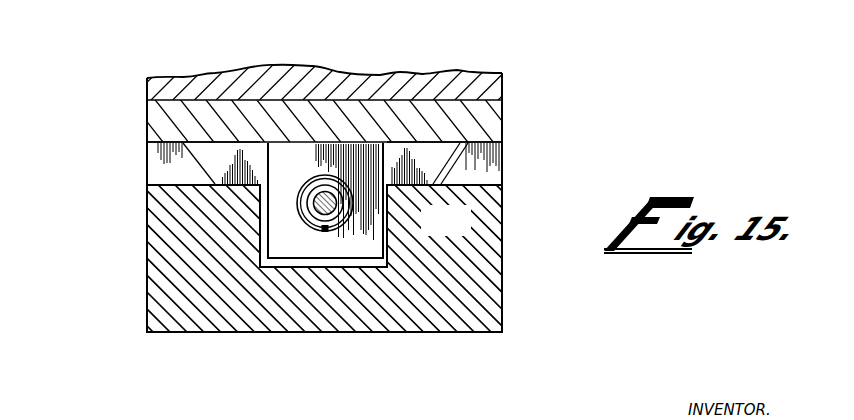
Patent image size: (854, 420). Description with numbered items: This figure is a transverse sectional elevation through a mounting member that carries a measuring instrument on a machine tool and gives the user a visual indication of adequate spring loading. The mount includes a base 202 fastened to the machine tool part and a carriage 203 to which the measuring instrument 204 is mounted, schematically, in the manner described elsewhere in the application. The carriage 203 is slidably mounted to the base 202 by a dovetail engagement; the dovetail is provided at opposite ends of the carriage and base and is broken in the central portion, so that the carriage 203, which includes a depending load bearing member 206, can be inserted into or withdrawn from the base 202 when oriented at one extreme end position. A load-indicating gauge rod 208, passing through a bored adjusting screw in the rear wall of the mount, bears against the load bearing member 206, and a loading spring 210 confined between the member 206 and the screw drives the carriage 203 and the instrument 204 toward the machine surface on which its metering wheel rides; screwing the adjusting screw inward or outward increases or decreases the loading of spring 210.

The base 202 is at (324, 258).
The carriage 203 is at (267, 163).
The measuring instrument 204 is at (284, 123).
The load bearing member 206 is at (334, 277).
The load-indicating gauge rod 208 is at (380, 205).
The loading spring 210 is at (303, 318).